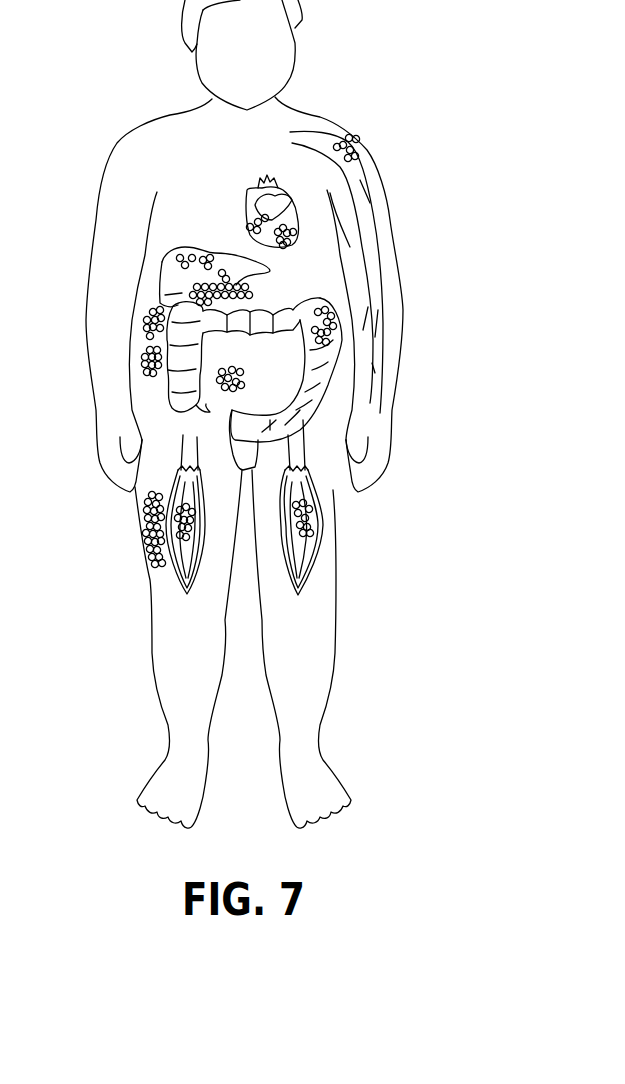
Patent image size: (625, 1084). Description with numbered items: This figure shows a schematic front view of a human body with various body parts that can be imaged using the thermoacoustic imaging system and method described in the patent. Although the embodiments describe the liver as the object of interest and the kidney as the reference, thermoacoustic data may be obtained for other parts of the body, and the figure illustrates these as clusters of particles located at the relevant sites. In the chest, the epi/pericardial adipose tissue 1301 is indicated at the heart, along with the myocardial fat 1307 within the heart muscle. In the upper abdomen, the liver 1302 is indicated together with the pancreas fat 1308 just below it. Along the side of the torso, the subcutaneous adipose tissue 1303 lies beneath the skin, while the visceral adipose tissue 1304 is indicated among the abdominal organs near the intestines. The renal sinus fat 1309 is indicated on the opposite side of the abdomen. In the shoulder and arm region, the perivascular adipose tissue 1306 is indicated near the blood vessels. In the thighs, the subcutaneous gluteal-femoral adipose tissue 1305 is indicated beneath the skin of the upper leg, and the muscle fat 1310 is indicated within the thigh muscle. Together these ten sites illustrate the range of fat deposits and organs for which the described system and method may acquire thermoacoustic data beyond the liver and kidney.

The epi/pericardial adipose tissue 1301 is at (247, 221).
The liver 1302 is at (160, 262).
The subcutaneous adipose tissue 1303 is at (148, 360).
The visceral adipose tissue 1304 is at (215, 382).
The subcutaneous gluteal-femoral adipose tissue 1305 is at (140, 522).
The perivascular adipose tissue 1306 is at (355, 137).
The myocardial fat 1307 is at (298, 228).
The pancreas fat 1308 is at (250, 290).
The renal sinus fat 1309 is at (330, 332).
The muscle fat 1310 is at (310, 517).